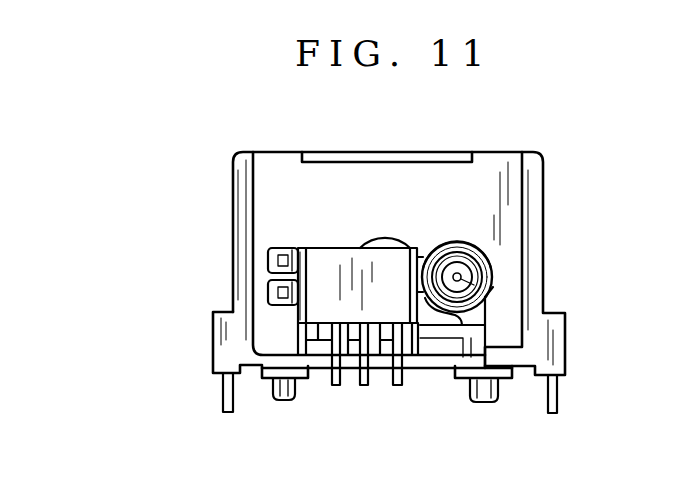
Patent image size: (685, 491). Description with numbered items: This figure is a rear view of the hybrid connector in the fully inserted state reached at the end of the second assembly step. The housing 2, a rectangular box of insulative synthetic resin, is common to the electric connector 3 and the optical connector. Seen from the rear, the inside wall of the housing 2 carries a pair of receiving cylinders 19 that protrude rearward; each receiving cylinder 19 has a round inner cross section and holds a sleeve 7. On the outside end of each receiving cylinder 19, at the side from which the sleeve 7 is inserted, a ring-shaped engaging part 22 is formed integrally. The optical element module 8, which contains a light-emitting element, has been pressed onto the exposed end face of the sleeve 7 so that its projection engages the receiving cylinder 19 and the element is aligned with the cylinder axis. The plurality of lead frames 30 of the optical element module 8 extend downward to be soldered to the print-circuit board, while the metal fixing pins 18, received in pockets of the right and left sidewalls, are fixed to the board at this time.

The housing 2 is at (276, 163).
The electric connector 3 is at (278, 313).
The sleeve 7 is at (474, 285).
The optical element module 8 is at (330, 260).
The fixing pin 18 is at (222, 398).
The receiving cylinder 19 is at (383, 241).
The engaging part 22 is at (490, 253).
The lead frame 30 is at (336, 385).